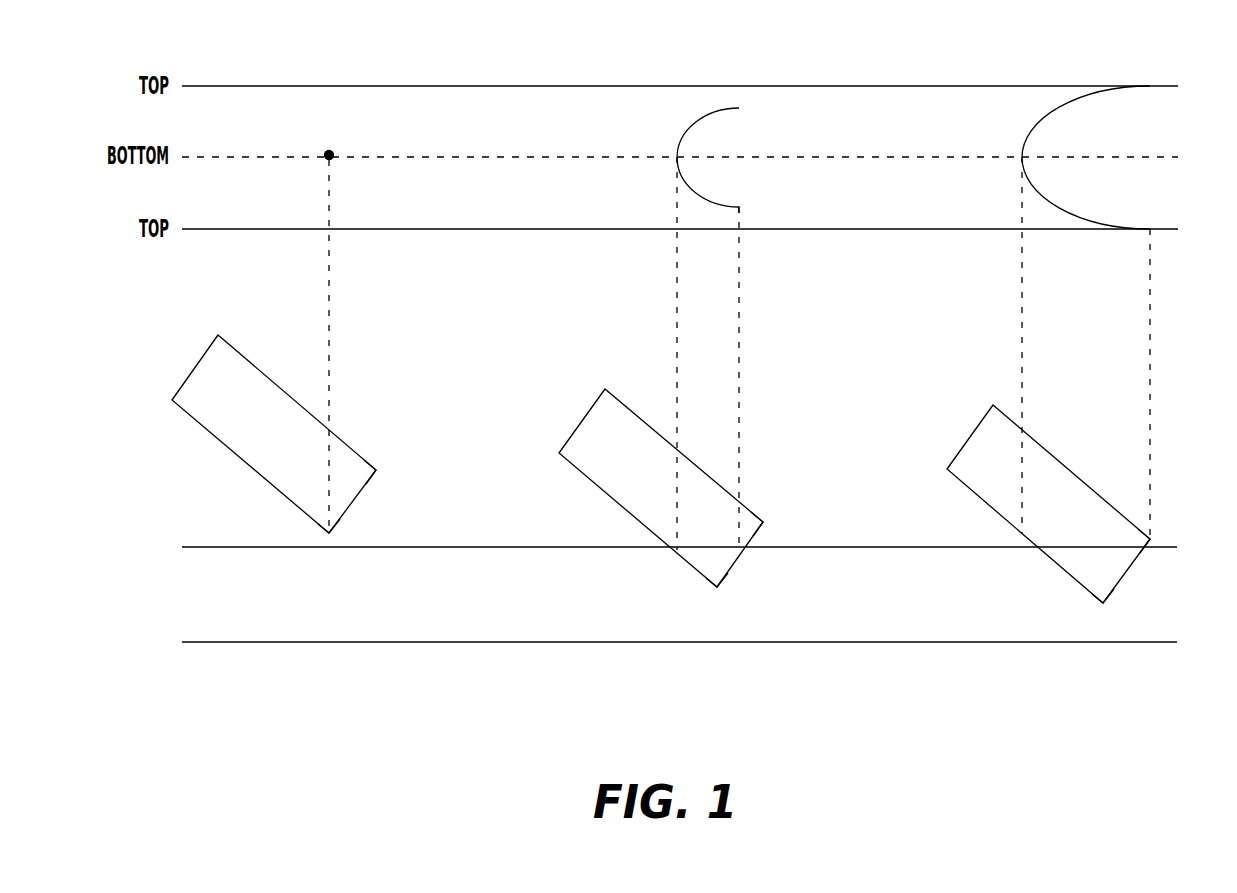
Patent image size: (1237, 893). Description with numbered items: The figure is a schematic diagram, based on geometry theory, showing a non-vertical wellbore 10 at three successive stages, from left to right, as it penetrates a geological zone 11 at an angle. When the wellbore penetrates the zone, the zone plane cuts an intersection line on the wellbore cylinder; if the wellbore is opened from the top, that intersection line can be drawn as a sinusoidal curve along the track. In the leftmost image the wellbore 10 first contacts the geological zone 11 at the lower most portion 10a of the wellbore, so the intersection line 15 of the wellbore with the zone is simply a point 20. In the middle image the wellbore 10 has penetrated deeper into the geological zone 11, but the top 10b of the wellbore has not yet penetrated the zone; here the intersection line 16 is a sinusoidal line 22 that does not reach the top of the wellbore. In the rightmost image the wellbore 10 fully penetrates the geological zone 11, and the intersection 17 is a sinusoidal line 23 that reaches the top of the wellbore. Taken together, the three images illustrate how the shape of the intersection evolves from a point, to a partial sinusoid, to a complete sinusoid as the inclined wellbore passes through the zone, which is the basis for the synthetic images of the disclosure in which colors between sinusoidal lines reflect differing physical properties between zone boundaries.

The wellbore 10 is at (298, 453).
The lower most portion of the wellbore 10a is at (329, 560).
The top of the wellbore 10b is at (377, 470).
The geological zone 11 is at (436, 609).
The intersection line 15 is at (331, 259).
The intersection line 16 is at (741, 259).
The intersection 17 is at (1152, 259).
The point 20 is at (327, 133).
The sinusoidal line 22 is at (719, 96).
The sinusoidal line 23 is at (1057, 96).